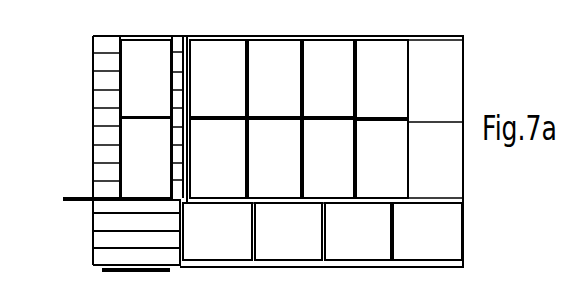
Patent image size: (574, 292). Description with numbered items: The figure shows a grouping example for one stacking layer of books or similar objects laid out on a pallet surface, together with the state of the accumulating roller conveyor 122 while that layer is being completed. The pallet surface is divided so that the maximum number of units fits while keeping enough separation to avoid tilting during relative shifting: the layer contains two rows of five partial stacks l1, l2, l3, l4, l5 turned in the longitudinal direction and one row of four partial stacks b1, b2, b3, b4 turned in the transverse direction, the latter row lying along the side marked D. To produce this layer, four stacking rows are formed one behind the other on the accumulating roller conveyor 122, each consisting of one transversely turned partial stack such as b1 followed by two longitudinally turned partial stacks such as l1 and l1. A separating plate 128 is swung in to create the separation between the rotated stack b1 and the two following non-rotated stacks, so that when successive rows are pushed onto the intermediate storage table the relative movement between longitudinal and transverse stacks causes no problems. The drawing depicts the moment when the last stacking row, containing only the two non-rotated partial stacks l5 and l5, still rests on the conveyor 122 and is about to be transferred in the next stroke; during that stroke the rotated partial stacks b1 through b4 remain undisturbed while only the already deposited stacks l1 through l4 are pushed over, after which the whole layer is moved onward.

The separating plate 128 is at (77, 197).
The accumulating roller conveyor 122 is at (102, 238).
The reference plane D is at (463, 201).
The partial stack turned in the longitudinal direction l1 is at (382, 119).
The partial stack turned in the longitudinal direction l2 is at (328, 119).
The partial stack turned in the longitudinal direction l3 is at (274, 119).
The partial stack turned in the longitudinal direction l4 is at (218, 119).
The partial stack turned in the longitudinal direction l5 is at (146, 119).
The partial stack turned in the transverse direction b1 is at (427, 231).
The partial stack turned in the transverse direction b2 is at (358, 231).
The partial stack turned in the transverse direction b3 is at (288, 231).
The partial stack turned in the transverse direction b4 is at (217, 231).